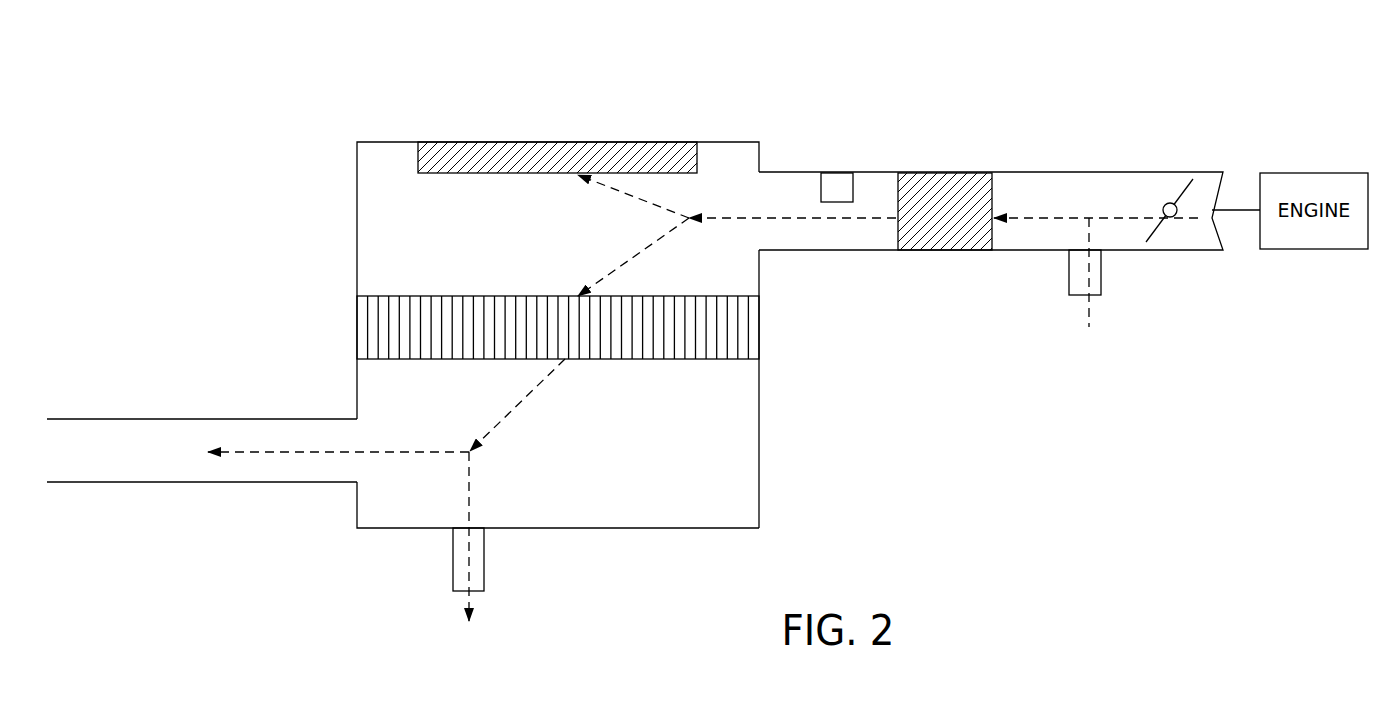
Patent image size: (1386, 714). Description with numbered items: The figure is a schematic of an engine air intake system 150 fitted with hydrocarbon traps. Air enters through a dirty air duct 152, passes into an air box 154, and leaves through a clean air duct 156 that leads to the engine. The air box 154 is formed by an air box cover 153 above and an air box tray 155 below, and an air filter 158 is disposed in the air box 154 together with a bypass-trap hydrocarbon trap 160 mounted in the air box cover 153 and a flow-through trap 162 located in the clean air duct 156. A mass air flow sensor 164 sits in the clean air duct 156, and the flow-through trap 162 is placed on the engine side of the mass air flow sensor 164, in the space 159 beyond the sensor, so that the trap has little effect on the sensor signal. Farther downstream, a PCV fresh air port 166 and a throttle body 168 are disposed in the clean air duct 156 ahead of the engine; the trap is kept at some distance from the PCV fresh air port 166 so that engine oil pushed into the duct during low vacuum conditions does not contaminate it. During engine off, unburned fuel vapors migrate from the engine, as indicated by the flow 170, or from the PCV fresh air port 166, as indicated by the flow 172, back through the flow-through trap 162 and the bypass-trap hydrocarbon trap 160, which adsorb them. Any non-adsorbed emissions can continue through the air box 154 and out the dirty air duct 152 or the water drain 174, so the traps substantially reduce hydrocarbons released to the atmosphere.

The air intake system 150 is at (257, 203).
The dirty air duct 152 is at (167, 482).
The air box cover 153 is at (377, 265).
The air box 154 is at (699, 389).
The air box tray 155 is at (630, 513).
The clean air duct 156 is at (1042, 170).
The air filter 158 is at (760, 327).
The space 159 is at (887, 187).
The bypass-trap hydrocarbon trap 160 is at (570, 142).
The flow-through trap 162 is at (940, 250).
The mass air flow sensor 164 is at (853, 187).
The PCV fresh air port 166 is at (1068, 280).
The throttle body 168 is at (1178, 197).
The hydrocarbon migration from engine 170 is at (1180, 220).
The flow from PCV fresh air port 172 is at (1090, 233).
The water drain 174 is at (484, 560).